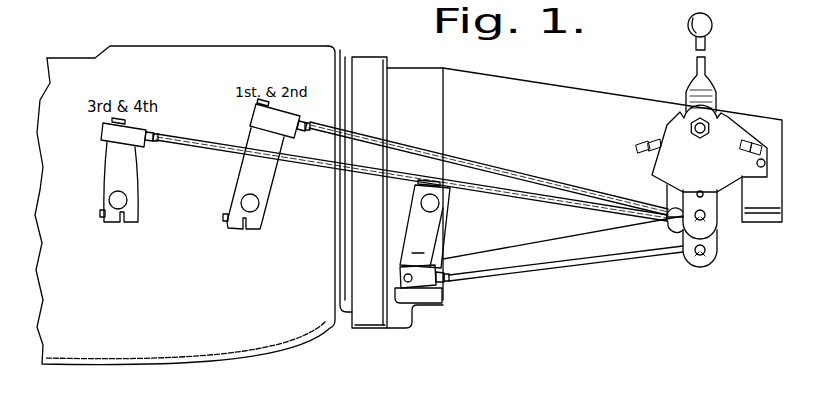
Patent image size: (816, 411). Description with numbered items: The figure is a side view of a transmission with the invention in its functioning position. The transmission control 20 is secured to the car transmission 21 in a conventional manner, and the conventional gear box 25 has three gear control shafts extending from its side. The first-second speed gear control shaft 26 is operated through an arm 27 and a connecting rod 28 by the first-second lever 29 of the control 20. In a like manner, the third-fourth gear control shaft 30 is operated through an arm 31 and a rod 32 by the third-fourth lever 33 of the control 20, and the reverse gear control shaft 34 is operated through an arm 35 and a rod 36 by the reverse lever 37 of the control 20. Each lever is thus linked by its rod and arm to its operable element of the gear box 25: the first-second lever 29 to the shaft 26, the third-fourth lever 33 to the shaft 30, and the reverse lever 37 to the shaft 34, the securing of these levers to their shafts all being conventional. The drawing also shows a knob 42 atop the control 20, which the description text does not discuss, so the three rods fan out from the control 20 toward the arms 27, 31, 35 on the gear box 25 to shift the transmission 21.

The transmission control 20 is at (694, 152).
The car transmission 21 is at (178, 374).
The gear box 25 is at (218, 48).
The first-second speed gear control shaft 26 is at (260, 175).
The arm 27 is at (267, 165).
The connecting rod 28 is at (398, 147).
The first-second lever 29 is at (668, 198).
The third-fourth gear control shaft 30 is at (128, 200).
The arm 31 is at (140, 170).
The rod 32 is at (188, 137).
The third-fourth lever 33 is at (710, 202).
The reverse gear control shaft 34 is at (440, 204).
The arm 35 is at (464, 234).
The rod 36 is at (590, 264).
The reverse lever 37 is at (718, 250).
The shift knob 42 is at (706, 42).